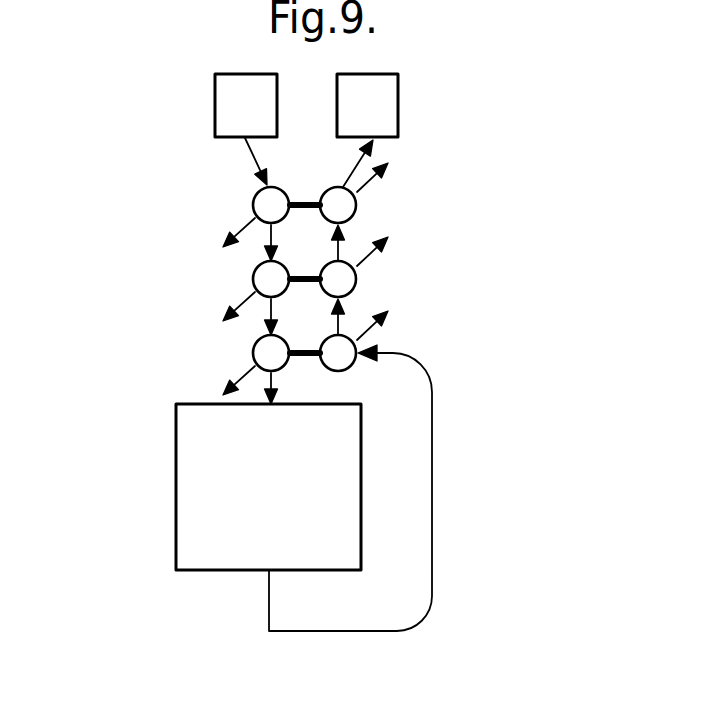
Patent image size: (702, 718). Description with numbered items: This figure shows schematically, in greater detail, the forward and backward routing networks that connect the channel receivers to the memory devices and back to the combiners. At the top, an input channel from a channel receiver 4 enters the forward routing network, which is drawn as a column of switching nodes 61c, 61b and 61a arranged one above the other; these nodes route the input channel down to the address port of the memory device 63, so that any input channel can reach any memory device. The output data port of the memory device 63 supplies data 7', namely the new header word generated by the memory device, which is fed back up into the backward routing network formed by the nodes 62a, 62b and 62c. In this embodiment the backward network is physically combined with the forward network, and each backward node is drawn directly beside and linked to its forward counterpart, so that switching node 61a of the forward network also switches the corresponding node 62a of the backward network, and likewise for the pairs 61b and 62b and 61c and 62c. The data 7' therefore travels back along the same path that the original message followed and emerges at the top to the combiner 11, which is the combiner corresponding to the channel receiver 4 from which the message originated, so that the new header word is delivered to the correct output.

The channel receiver 4 is at (215, 97).
The combiner 11 is at (398, 120).
The node of the forward routing network 61a is at (252, 352).
The node of the forward routing network 61b is at (252, 277).
The node of the forward routing network 61c is at (252, 203).
The node of the backward routing network 62a is at (350, 371).
The node of the backward routing network 62b is at (360, 288).
The node of the backward routing network 62c is at (360, 215).
The memory device 63 is at (176, 452).
The data 7' is at (350, 488).